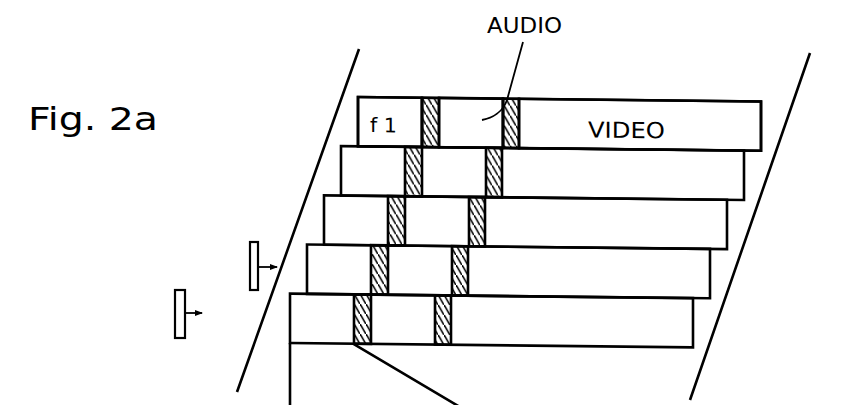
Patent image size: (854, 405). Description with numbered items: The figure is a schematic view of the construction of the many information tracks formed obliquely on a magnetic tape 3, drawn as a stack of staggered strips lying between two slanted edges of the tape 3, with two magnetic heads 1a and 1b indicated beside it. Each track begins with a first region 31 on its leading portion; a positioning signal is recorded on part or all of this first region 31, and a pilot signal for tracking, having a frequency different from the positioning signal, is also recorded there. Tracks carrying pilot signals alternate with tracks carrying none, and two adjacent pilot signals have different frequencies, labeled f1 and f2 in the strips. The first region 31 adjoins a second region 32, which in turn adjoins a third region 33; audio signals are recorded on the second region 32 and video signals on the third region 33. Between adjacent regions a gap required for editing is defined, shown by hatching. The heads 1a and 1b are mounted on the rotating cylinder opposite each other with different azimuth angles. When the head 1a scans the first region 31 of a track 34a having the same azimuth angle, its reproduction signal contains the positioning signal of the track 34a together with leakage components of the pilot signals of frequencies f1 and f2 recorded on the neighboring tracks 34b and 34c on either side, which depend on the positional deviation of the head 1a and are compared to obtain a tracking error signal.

The magnetic head 1a is at (248, 272).
The magnetic head 1b is at (175, 315).
The magnetic tape 3 is at (790, 128).
The first region 31 is at (425, 93).
The second region 32 is at (503, 93).
The third region 33 is at (760, 93).
The track 34a is at (710, 280).
The track 34b is at (692, 333).
The track 34c is at (728, 232).